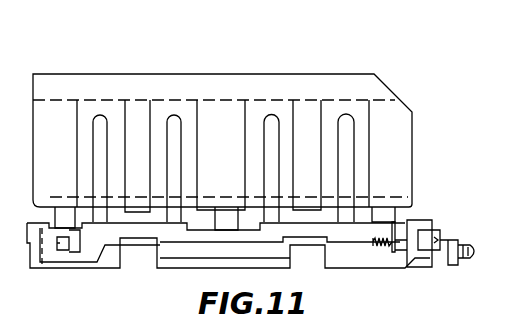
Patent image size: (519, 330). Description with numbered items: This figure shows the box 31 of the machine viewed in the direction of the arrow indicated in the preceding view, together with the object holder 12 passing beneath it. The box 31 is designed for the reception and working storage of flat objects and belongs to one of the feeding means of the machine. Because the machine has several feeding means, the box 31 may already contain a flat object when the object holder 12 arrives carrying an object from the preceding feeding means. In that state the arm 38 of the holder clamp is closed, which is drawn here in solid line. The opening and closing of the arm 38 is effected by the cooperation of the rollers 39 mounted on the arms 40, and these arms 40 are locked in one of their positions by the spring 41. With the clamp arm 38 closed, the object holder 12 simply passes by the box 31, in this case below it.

The object holder 12 is at (178, 258).
The box 31 is at (313, 85).
The arm 38 is at (175, 122).
The rollers 39 is at (453, 237).
The arms 40 is at (437, 262).
The spring 41 is at (380, 250).